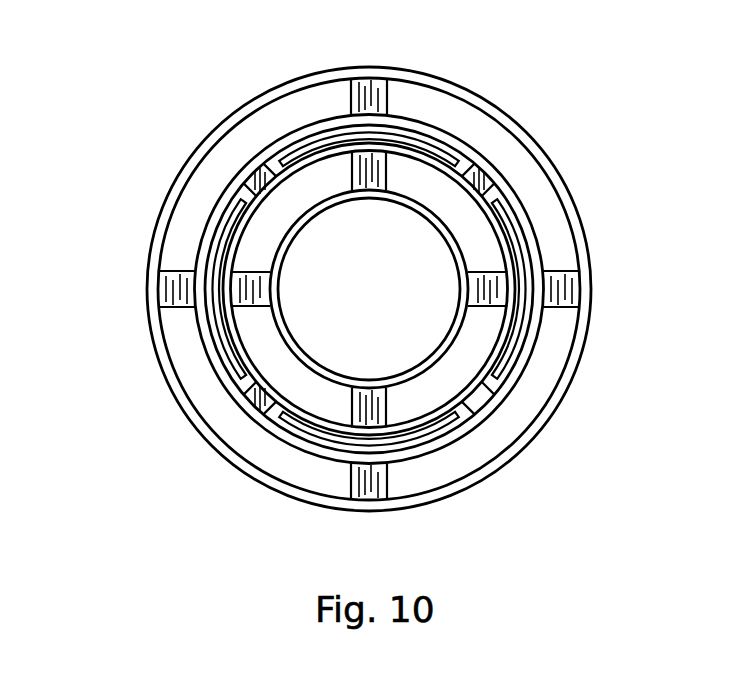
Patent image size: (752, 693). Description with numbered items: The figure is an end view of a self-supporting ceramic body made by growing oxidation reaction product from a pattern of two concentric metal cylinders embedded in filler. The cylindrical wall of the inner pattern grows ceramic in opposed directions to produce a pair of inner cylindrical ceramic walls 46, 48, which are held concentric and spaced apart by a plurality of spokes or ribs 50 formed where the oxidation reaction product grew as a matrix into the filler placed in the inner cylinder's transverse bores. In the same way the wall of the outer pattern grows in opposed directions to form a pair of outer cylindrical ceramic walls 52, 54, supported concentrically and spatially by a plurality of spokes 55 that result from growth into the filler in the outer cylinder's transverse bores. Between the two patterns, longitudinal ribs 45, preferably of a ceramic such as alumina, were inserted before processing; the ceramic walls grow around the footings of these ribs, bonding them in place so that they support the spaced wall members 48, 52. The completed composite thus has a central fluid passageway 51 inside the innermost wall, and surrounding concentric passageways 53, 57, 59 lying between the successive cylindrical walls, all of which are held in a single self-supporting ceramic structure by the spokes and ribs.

The longitudinal ribs 45 is at (250, 163).
The inner cylindrical ceramic wall 46 is at (445, 235).
The inner cylindrical ceramic wall 48 is at (232, 237).
The spokes or ribs 50 is at (377, 195).
The central fluid passageway 51 is at (340, 305).
The outer cylindrical ceramic wall 52 is at (527, 203).
The concentric passageway 53 is at (272, 222).
The outer cylindrical ceramic wall 54 is at (508, 118).
The spokes 55 is at (383, 90).
The concentric passageway 57 is at (212, 283).
The concentric passageway 59 is at (268, 458).